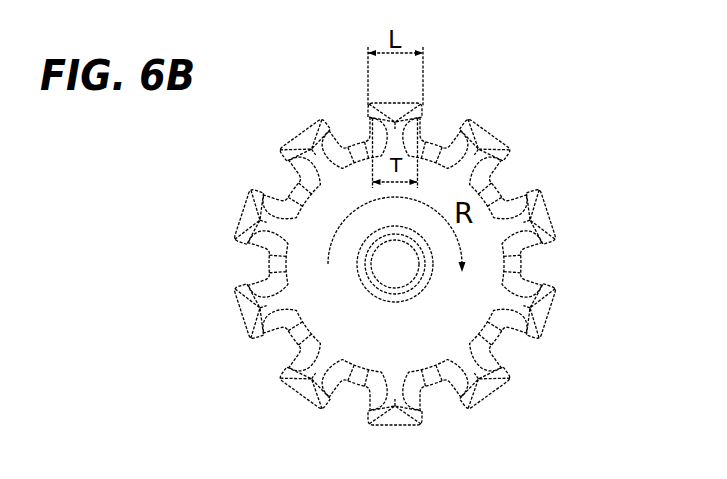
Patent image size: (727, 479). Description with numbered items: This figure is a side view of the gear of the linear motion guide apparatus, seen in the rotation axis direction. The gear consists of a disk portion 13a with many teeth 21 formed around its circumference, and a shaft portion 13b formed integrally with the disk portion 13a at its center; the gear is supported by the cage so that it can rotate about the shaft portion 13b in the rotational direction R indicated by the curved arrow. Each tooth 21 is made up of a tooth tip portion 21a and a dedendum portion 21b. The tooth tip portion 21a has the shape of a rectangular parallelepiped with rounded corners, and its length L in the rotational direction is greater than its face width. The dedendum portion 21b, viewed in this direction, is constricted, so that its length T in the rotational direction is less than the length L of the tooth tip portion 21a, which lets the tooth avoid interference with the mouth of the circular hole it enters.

The disk portion 13a is at (422, 234).
The shaft portion 13b is at (402, 270).
The tooth 21 is at (449, 103).
The tooth tip portion 21a is at (393, 112).
The dedendum portion 21b is at (418, 132).